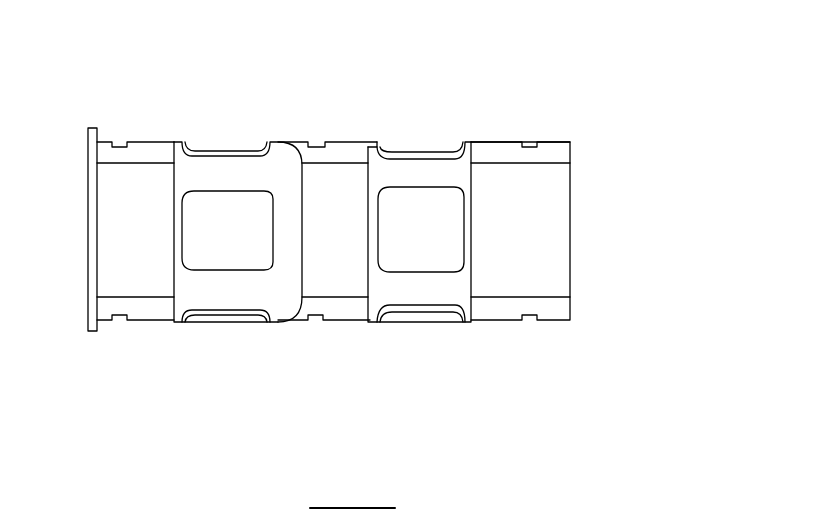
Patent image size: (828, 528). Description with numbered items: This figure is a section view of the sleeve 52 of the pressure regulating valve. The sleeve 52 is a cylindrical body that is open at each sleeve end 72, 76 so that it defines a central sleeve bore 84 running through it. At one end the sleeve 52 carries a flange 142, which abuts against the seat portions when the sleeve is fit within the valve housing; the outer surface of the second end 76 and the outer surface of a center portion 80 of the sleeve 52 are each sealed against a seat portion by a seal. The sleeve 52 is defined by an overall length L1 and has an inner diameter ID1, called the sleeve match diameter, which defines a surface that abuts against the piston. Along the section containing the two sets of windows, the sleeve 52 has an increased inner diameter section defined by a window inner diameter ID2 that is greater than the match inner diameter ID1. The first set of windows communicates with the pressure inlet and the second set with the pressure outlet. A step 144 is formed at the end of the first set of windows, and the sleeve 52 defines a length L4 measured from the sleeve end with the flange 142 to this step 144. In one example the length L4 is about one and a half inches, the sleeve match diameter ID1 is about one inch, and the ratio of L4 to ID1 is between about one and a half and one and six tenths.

The sleeve 52 is at (634, 69).
The flange 142 is at (92, 128).
The second end 76 is at (104, 152).
The center portion 80 is at (341, 152).
The sleeve end 72 is at (558, 153).
The central sleeve bore 84 is at (548, 235).
The step 144 is at (302, 297).
The overall length L1 is at (570, 82).
The length from the sleeve end with the flange to the step L4 is at (302, 428).
The inner diameter (sleeve match diameter) ID1 is at (142, 180).
The window inner diameter ID2 is at (207, 104).